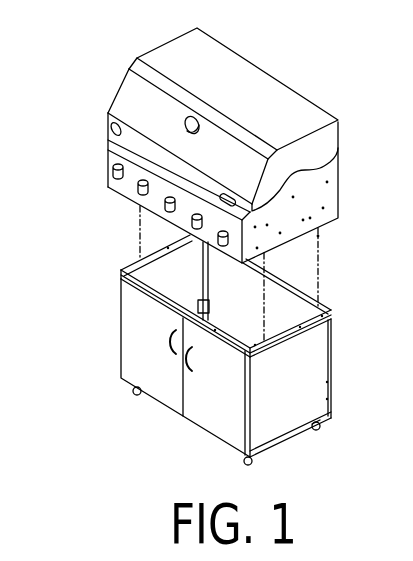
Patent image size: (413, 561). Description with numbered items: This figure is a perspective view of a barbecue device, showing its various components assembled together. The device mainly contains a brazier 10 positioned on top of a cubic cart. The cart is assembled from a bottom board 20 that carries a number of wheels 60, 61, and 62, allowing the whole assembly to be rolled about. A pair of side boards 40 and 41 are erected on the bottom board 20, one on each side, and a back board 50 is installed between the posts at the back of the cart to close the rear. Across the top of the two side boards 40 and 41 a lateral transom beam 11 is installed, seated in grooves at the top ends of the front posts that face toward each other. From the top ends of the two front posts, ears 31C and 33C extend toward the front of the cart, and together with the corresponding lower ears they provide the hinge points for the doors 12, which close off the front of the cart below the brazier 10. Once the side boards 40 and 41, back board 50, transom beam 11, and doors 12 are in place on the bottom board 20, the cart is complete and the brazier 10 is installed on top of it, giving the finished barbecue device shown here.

The brazier 10 is at (335, 215).
The lateral transom beam 11 is at (143, 309).
The doors 12 is at (188, 400).
The bottom board 20 is at (290, 430).
The ear 31C is at (120, 270).
The ear 33C is at (250, 350).
The side board 40 is at (141, 259).
The side board 41 is at (331, 341).
The back board 50 is at (268, 268).
The wheel 60 is at (137, 392).
The wheel 61 is at (251, 458).
The wheel 62 is at (331, 416).